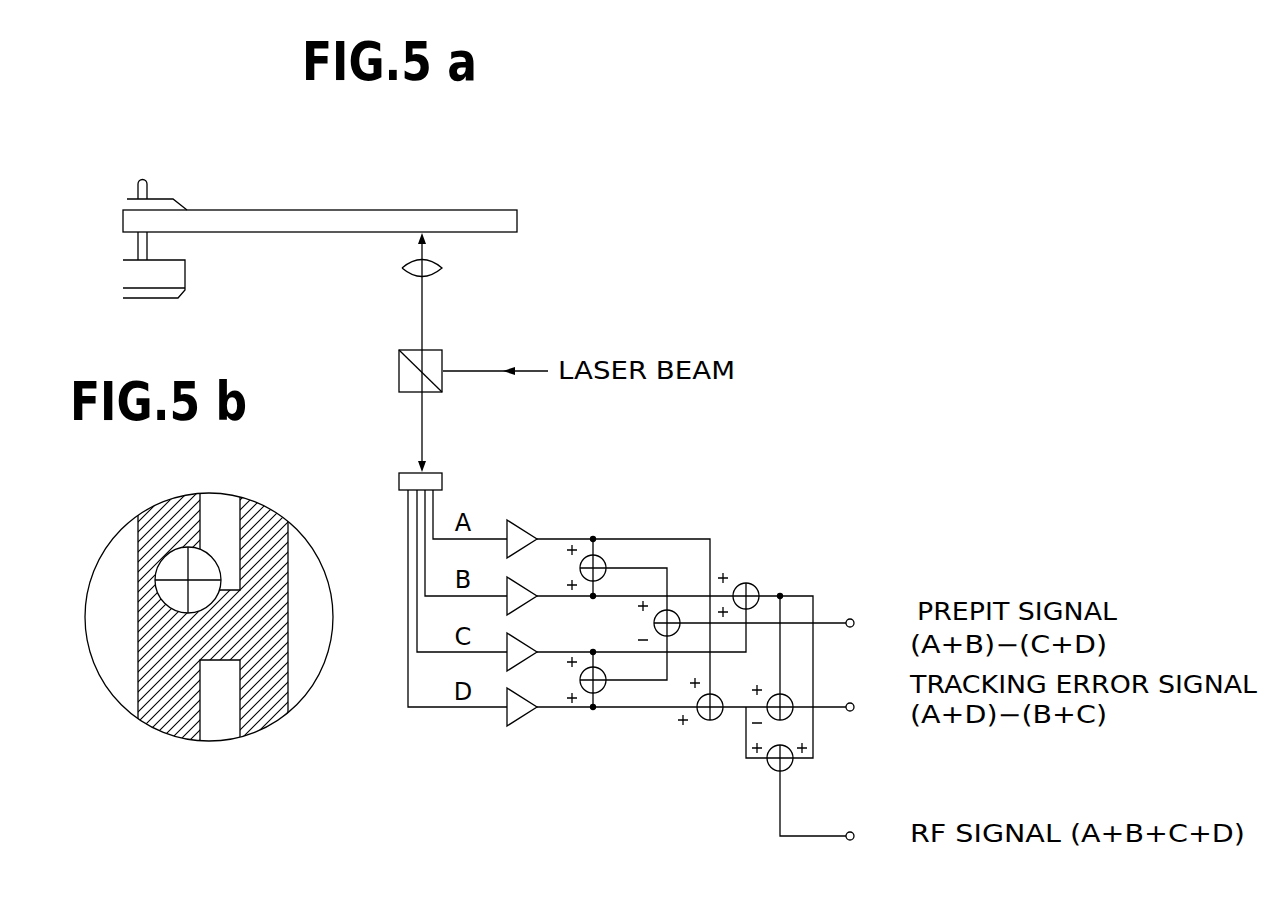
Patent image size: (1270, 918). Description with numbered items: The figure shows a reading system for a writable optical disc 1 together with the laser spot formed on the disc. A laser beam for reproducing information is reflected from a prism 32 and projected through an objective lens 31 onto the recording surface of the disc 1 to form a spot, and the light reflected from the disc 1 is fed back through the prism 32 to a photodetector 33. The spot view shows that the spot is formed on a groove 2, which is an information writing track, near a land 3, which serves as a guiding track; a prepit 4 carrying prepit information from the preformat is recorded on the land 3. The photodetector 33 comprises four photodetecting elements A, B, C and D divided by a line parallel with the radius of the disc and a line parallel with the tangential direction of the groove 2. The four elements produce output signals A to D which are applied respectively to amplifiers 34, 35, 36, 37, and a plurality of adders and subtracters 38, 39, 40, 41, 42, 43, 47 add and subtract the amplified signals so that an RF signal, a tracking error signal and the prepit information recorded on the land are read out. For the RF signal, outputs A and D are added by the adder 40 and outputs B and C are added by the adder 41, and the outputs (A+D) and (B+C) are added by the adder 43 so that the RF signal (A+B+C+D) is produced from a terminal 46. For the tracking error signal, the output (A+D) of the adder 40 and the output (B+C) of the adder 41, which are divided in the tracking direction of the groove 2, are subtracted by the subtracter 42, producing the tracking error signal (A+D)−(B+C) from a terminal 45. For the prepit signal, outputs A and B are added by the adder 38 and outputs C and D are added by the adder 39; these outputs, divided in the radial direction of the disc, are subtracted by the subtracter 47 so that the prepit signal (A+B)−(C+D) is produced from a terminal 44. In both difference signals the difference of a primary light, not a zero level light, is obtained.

In FIG. 5a, the optical disc 1 is at (495, 202).
In FIG. 5b, the optical disc 1 is at (126, 691).
In FIG. 5b, the groove 2 is at (178, 727).
In FIG. 5b, the land 3 is at (219, 732).
In FIG. 5b, the prepit 4 is at (252, 632).
In FIG. 5a, the objective lens 31 is at (442, 267).
In FIG. 5a, the prism 32 is at (442, 360).
In FIG. 5a, the photodetector 33 is at (440, 483).
In FIG. 5b, the photodetector 33 is at (157, 593).
In FIG. 5a, the amplifier 34 is at (527, 534).
In FIG. 5a, the amplifier 35 is at (522, 590).
In FIG. 5a, the amplifier 36 is at (522, 647).
In FIG. 5a, the amplifier 37 is at (522, 714).
In FIG. 5a, the adder 38 is at (603, 558).
In FIG. 5a, the adder 39 is at (603, 690).
In FIG. 5a, the adder 40 is at (713, 720).
In FIG. 5a, the adder 41 is at (755, 583).
In FIG. 5a, the subtracter 42 is at (790, 697).
In FIG. 5a, the adder 43 is at (768, 765).
In FIG. 5a, the terminal 44 is at (850, 619).
In FIG. 5a, the terminal 45 is at (851, 711).
In FIG. 5a, the terminal 46 is at (849, 840).
In FIG. 5a, the subtracter 47 is at (672, 613).